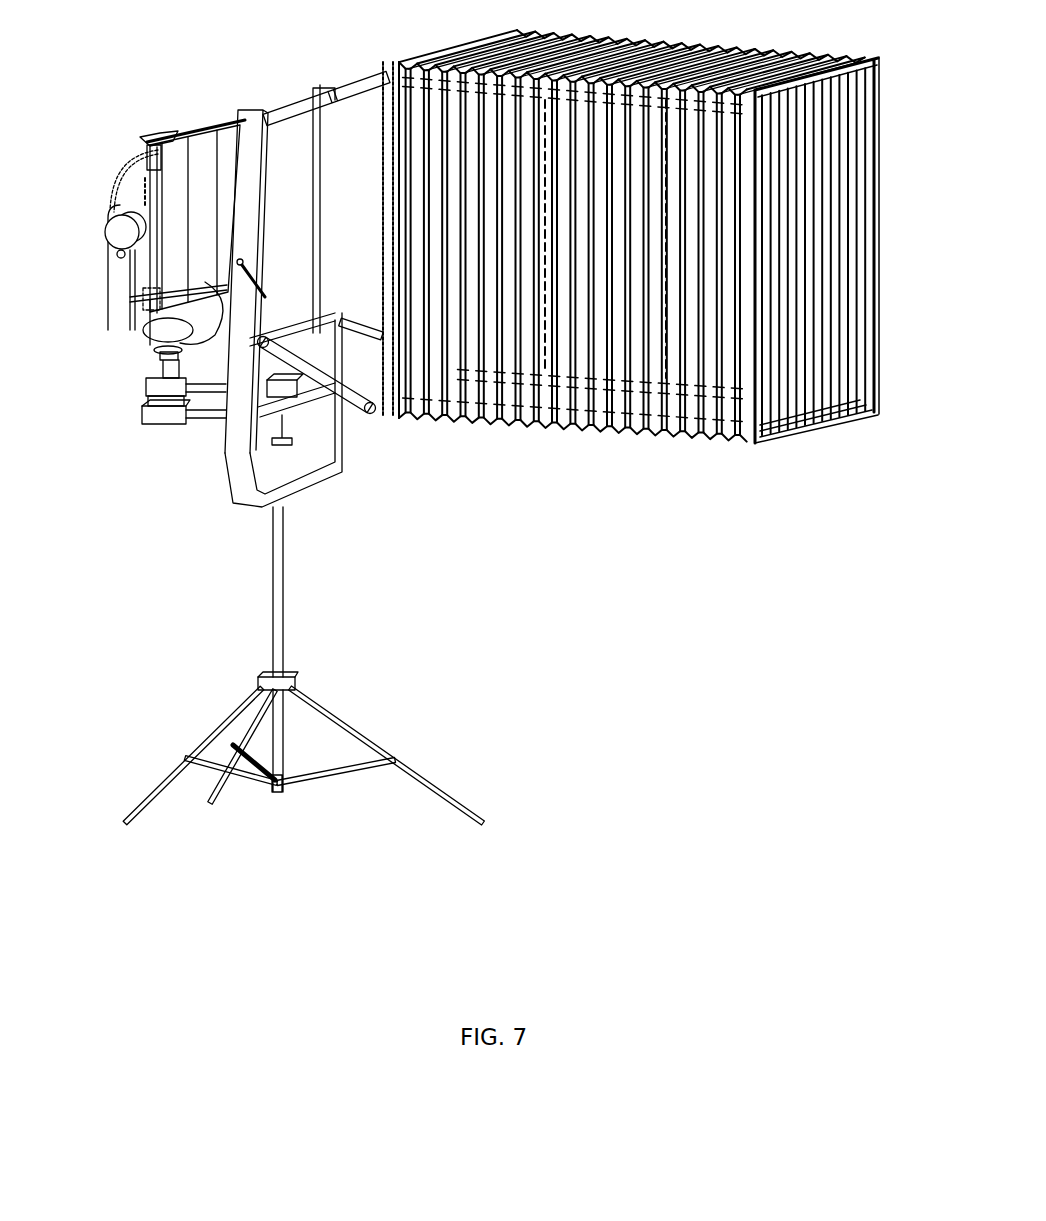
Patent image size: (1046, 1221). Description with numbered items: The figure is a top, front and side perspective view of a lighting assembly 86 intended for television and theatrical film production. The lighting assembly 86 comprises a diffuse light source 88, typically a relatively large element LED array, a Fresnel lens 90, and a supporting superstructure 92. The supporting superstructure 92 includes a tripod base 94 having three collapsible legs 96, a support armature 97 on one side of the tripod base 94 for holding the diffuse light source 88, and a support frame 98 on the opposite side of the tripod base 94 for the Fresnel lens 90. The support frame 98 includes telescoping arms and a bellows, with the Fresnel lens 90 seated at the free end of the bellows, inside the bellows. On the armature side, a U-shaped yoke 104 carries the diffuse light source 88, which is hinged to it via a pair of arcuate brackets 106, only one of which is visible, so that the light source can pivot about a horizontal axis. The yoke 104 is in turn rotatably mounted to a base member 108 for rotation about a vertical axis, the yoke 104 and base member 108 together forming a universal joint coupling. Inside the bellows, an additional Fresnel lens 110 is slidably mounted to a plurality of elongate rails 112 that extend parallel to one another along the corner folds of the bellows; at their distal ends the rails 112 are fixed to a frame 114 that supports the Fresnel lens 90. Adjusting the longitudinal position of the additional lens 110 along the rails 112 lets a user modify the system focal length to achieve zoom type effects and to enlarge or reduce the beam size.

The lighting assembly 86 is at (123, 545).
The diffuse light source 88 is at (200, 165).
The Fresnel lens 90 is at (858, 127).
The supporting superstructure 92 is at (336, 502).
The tripod base 94 is at (285, 640).
The collapsible legs 96 is at (345, 740).
The support armature 97 is at (124, 414).
The support frame 98 is at (362, 425).
The U-shaped yoke 104 is at (118, 308).
The arcuate brackets 106 is at (125, 170).
The base member 108 is at (143, 384).
The additional Fresnel lens 110 is at (650, 327).
The elongate rails 112 is at (651, 384).
The frame 114 is at (870, 203).